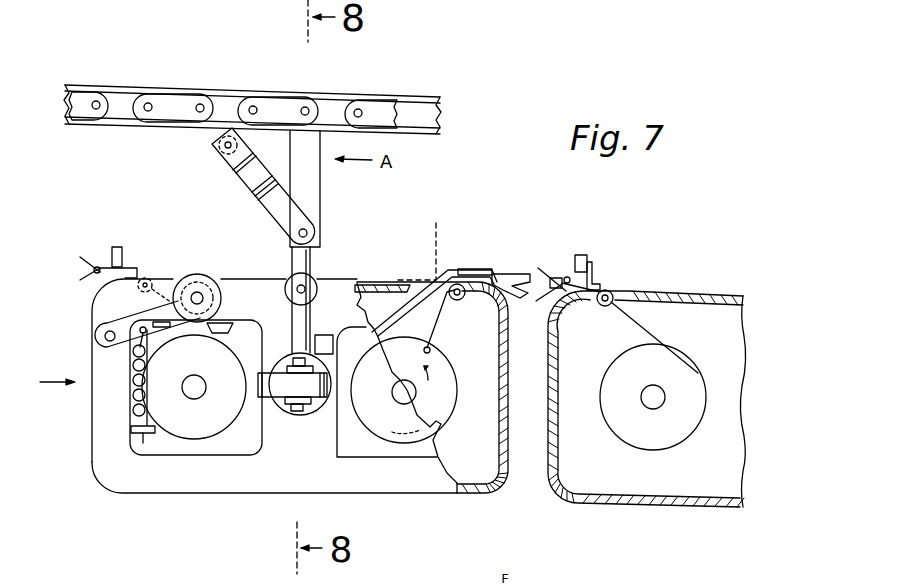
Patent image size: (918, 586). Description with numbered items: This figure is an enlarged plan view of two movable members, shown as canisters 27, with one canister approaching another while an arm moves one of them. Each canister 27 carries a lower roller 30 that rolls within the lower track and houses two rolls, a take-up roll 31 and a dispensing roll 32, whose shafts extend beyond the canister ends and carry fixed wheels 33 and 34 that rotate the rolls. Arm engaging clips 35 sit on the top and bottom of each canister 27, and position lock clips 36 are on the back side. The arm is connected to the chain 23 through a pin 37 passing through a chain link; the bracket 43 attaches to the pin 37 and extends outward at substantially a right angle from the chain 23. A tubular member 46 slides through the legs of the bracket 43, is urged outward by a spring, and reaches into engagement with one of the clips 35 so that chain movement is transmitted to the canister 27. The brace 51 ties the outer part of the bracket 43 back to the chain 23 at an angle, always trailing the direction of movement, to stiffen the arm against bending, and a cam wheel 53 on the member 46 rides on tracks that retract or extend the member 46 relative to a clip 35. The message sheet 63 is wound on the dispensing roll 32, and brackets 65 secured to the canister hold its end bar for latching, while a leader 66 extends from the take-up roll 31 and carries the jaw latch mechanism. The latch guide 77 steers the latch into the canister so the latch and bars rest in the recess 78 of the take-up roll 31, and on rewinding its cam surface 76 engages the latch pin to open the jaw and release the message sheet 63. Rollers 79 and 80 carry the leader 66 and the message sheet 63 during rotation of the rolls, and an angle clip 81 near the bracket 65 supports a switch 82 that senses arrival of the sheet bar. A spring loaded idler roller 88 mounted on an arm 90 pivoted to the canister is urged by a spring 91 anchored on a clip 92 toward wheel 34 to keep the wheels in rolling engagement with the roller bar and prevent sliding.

The chain 23 is at (382, 97).
The pin 37 is at (309, 108).
The bracket 43 is at (321, 197).
The brace 51 is at (236, 171).
The member 46 is at (312, 270).
The cam wheel 53 is at (285, 284).
The arm engaging clip 35 is at (323, 335).
The canister 27 is at (253, 494).
The recess 78 is at (437, 428).
The wheel 34 is at (194, 444).
The spring 91 is at (133, 411).
The clip 92 is at (130, 440).
The lower roller 30 is at (284, 395).
The wheel 33 is at (363, 458).
The take-up roll 31 is at (450, 362).
The idler roller 88 is at (204, 274).
The arm 90 is at (136, 314).
The position lock clip 36 is at (403, 247).
The leader 66 is at (440, 333).
The roller 80 is at (460, 301).
The latch guide 77 is at (462, 269).
The cam surface 76 is at (500, 284).
The bracket 65 is at (541, 273).
The switch 82 is at (582, 255).
The angle clip 81 is at (592, 272).
The roller 79 is at (601, 305).
The dispensing roll 32 is at (612, 437).
The message sheet 63 is at (662, 338).